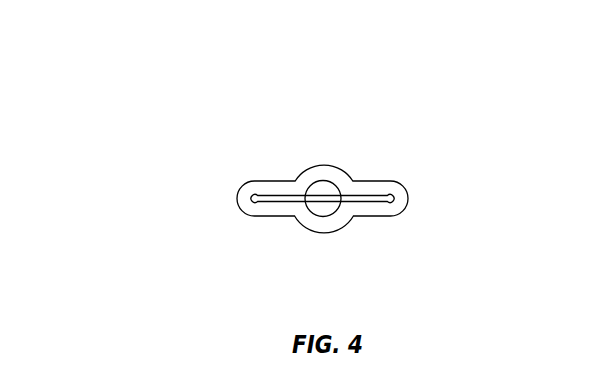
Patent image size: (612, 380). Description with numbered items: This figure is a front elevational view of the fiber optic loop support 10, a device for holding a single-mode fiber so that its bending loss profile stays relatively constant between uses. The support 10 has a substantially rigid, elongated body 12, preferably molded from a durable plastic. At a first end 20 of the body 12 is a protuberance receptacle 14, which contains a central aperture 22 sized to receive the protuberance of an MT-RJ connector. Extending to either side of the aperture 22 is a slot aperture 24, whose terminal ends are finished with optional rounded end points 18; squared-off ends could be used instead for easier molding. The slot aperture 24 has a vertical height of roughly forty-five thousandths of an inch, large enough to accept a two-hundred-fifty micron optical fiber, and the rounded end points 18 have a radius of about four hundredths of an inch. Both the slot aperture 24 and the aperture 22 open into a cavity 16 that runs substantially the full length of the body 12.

The fiber optic loop support 10 is at (386, 90).
The body 12 is at (260, 172).
The protuberance receptacle 14 is at (337, 167).
The cavity 16 is at (287, 180).
The rounded end points 18 is at (403, 188).
The first end 20 is at (182, 198).
The aperture 22 is at (322, 190).
The slot aperture 24 is at (373, 196).